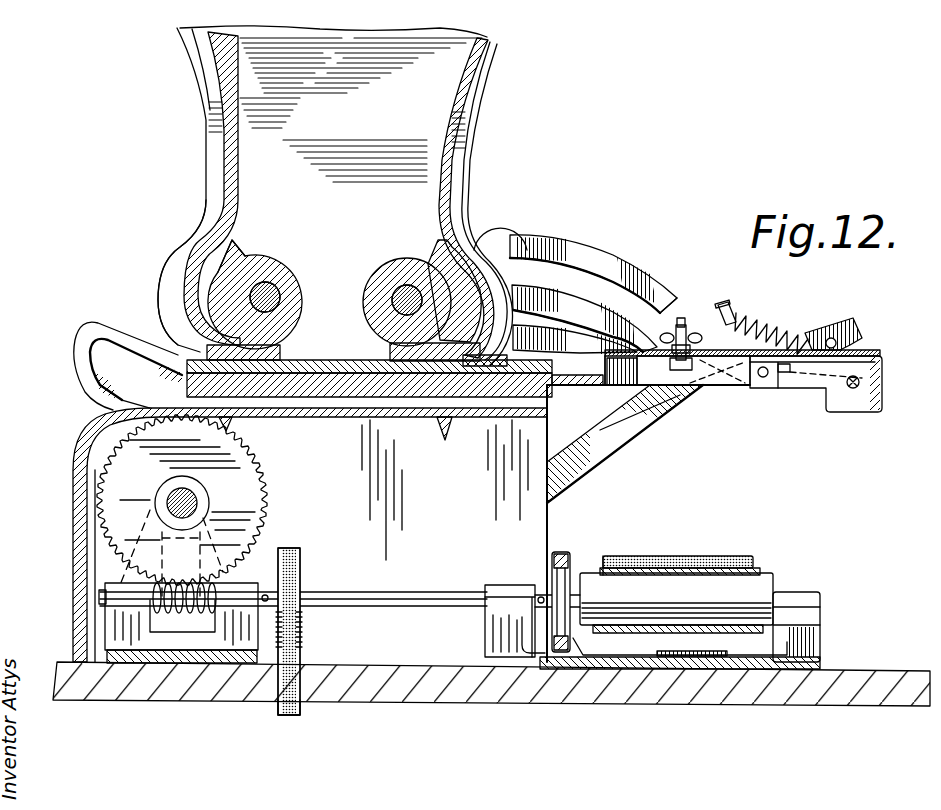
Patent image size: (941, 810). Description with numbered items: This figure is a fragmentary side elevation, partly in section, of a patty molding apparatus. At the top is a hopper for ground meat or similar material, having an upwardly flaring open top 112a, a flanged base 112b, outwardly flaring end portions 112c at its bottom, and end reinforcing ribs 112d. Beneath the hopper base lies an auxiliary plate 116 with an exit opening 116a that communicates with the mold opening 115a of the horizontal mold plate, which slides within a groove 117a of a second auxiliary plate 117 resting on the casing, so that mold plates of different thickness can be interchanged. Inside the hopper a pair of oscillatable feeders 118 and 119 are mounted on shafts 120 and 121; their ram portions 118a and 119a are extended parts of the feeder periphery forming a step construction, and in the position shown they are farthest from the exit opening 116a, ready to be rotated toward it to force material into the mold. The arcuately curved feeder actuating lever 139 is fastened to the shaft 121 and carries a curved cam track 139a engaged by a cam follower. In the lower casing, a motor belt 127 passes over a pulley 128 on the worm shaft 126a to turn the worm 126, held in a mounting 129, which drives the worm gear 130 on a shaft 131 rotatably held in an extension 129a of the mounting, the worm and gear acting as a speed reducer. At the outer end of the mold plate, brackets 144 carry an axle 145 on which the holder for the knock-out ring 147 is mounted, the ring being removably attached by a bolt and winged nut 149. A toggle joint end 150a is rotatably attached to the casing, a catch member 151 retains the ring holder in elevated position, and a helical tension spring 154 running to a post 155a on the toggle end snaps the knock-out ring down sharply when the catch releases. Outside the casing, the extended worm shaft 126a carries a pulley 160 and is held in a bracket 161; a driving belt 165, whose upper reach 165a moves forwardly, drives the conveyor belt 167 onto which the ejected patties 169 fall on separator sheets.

The upwardly flaring open top 112a is at (178, 32).
The flanged base 112b is at (187, 343).
The outwardly flaring end portions 112c is at (192, 258).
The end reinforcing ribs 112d is at (460, 133).
The mold opening 115a is at (606, 382).
The auxiliary plate 116 is at (300, 362).
The exit opening 116a is at (366, 370).
The second auxiliary plate 117 is at (291, 418).
The groove 117a is at (110, 397).
The oscillatable feeder 118 is at (292, 262).
The ram portion 118a is at (232, 243).
The oscillatable feeder 119 is at (382, 264).
The ram portion 119a is at (432, 245).
The shaft 120 is at (275, 288).
The shaft 121 is at (380, 290).
The worm 126 is at (177, 607).
The worm shaft 126a is at (333, 606).
The belt 127 is at (283, 712).
The pulley 128 is at (300, 570).
The mounting 129 is at (123, 625).
The extension 129a is at (253, 550).
The worm gear 130 is at (263, 523).
The shaft 131 is at (192, 497).
The feeder actuating lever 139 is at (622, 262).
The curved cam track 139a is at (680, 305).
The brackets 144 is at (836, 390).
The axle 145 is at (852, 389).
The knock-out ring 147 is at (744, 386).
The winged nut 149 is at (690, 322).
The toggle joint end 150a is at (592, 472).
The catch member 151 is at (836, 318).
The helical tension spring 154 is at (798, 332).
The post 155a is at (731, 312).
The pulley 160 is at (553, 577).
The bracket 161 is at (497, 638).
The driving belt 165 is at (560, 553).
The upper reach 165a is at (598, 560).
The conveyor belt 167 is at (762, 569).
The patties 169 is at (720, 556).